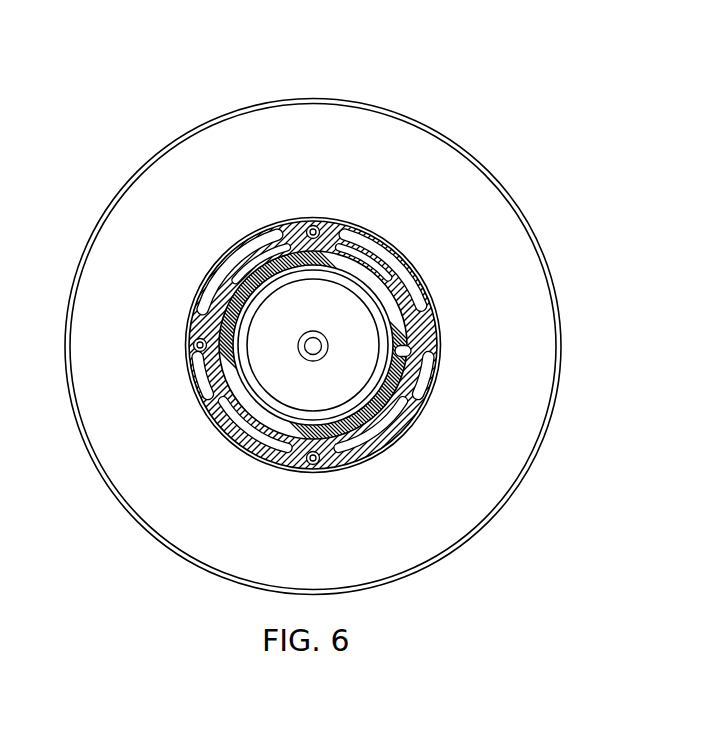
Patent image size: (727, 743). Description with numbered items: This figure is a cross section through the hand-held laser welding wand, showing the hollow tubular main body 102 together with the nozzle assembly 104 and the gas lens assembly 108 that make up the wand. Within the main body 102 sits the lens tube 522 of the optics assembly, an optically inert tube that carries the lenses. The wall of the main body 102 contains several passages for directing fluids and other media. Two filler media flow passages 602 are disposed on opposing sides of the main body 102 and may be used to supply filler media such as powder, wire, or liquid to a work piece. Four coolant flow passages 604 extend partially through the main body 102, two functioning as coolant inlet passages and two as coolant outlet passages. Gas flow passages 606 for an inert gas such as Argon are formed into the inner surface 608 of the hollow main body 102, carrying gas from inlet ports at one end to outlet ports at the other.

The main body 102 is at (345, 468).
The nozzle assembly 104 is at (406, 322).
The gas lens assembly 108 is at (400, 122).
The lens tube 522 is at (320, 266).
The filler media flow passages 602 is at (315, 225).
The coolant flow passages 604 is at (222, 274).
The gas flow passages 606 is at (244, 266).
The inner surface 608 is at (412, 354).